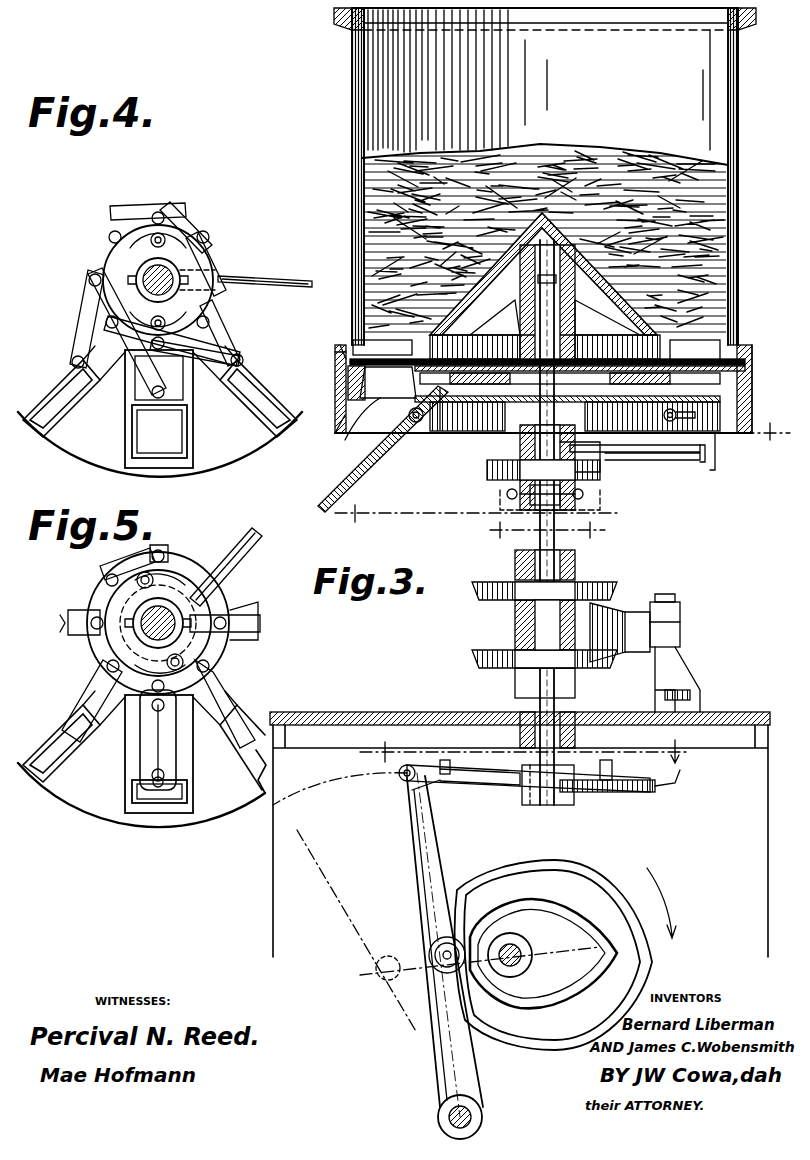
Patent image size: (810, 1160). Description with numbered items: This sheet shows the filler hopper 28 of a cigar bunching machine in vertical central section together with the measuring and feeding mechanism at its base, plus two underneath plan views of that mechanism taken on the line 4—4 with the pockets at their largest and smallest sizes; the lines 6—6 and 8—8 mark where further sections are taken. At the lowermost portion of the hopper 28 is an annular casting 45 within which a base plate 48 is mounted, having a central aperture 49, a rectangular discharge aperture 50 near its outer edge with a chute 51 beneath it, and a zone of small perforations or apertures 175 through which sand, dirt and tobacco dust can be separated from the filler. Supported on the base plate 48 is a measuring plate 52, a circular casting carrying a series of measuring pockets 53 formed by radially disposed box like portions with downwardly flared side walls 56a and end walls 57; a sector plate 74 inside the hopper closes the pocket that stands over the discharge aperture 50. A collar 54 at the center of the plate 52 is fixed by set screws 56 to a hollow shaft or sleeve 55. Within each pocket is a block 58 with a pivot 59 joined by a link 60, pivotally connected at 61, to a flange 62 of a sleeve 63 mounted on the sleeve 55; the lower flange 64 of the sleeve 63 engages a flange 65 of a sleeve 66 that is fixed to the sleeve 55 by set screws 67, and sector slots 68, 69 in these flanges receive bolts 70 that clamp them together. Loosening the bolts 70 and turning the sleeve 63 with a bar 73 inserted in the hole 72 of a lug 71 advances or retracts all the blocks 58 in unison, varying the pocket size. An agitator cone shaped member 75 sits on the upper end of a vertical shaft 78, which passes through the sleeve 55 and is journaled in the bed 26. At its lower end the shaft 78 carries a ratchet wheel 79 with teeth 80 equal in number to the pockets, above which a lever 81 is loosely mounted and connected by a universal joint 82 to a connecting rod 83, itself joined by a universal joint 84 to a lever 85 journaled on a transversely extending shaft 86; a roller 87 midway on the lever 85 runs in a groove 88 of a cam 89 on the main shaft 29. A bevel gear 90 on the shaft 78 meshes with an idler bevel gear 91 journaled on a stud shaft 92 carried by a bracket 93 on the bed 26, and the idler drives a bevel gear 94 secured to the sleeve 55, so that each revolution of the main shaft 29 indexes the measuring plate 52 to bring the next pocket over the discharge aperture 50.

In FIG. 3, the section line 4— 4 is at (545, 538).
In FIG. 3, the section line 6— 6 is at (556, 484).
In FIG. 3, the section line 8— 8 is at (519, 759).
In FIG. 3, the bed 26 is at (430, 712).
In FIG. 3, the hopper 28 is at (545, 176).
In FIG. 3, the main shaft 29 is at (522, 950).
In FIG. 3, the annular casting 45 is at (328, 352).
In FIG. 3, the base plate 48 is at (422, 422).
In FIG. 3, the central aperture 49 is at (448, 440).
In FIG. 3, the rectangular discharge aperture 50 is at (377, 430).
In FIG. 3, the chute 51 is at (383, 449).
In FIG. 3, the measuring plate 52 is at (752, 360).
In FIG. 4, the measuring plate 52 is at (263, 455).
In FIG. 5, the measuring plate 52 is at (142, 759).
In FIG. 3, the measuring pockets 53 is at (340, 433).
In FIG. 4, the measuring pockets 53 is at (185, 436).
In FIG. 3, the collar 54 is at (575, 312).
In FIG. 3, the hollow shaft or sleeve 55 is at (520, 298).
In FIG. 4, the hollow shaft or sleeve 55 is at (150, 318).
In FIG. 3, the set screws 56 is at (505, 332).
In FIG. 4, the side walls 56a is at (115, 430).
In FIG. 5, the side walls 56a is at (188, 795).
In FIG. 4, the end walls 57 is at (178, 465).
In FIG. 5, the end walls 57 is at (168, 813).
In FIG. 3, the block 58 is at (388, 382).
In FIG. 4, the block 58 is at (135, 404).
In FIG. 5, the block 58 is at (142, 760).
In FIG. 4, the pivot 59 is at (170, 405).
In FIG. 5, the pivot 59 is at (152, 782).
In FIG. 3, the link 60 is at (662, 416).
In FIG. 4, the link 60 is at (232, 254).
In FIG. 5, the link 60 is at (230, 690).
In FIG. 4, the pivotal connection 61 is at (205, 237).
In FIG. 5, the pivotal connection 61 is at (106, 663).
In FIG. 3, the flange 62 is at (570, 399).
In FIG. 4, the flange 62 is at (90, 278).
In FIG. 5, the flange 62 is at (222, 605).
In FIG. 3, the sleeve 63 is at (520, 420).
In FIG. 3, the flange 64 is at (487, 470).
In FIG. 3, the flange 65 is at (500, 492).
In FIG. 4, the flange 65 is at (120, 282).
In FIG. 5, the flange 65 is at (100, 608).
In FIG. 3, the sleeve 66 is at (582, 500).
In FIG. 4, the sleeve 66 is at (143, 294).
In FIG. 5, the sleeve 66 is at (178, 600).
In FIG. 3, the set screws 67 is at (584, 492).
In FIG. 4, the set screws 67 is at (163, 290).
In FIG. 5, the set screws 67 is at (235, 595).
In FIG. 4, the sector slot 68 is at (175, 230).
In FIG. 5, the sector slot 68 is at (168, 565).
In FIG. 5, the sector slot 69 is at (100, 600).
In FIG. 3, the bolts 70 is at (530, 495).
In FIG. 4, the bolts 70 is at (158, 212).
In FIG. 5, the bolts 70 is at (140, 570).
In FIG. 3, the lug 71 is at (698, 458).
In FIG. 3, the hole 72 is at (620, 447).
In FIG. 3, the bar 73 is at (705, 460).
In FIG. 4, the bar 73 is at (278, 280).
In FIG. 5, the bar 73 is at (262, 536).
In FIG. 3, the sector plate 74 is at (345, 345).
In FIG. 3, the cone shaped member 75 is at (607, 321).
In FIG. 3, the vertical shaft 78 is at (558, 306).
In FIG. 4, the vertical shaft 78 is at (145, 268).
In FIG. 5, the vertical shaft 78 is at (145, 630).
In FIG. 3, the ratchet wheel 79 is at (630, 790).
In FIG. 3, the teeth 80 is at (580, 790).
In FIG. 3, the lever 81 is at (669, 780).
In FIG. 3, the universal joint 82 is at (625, 742).
In FIG. 3, the connecting rod 83 is at (510, 784).
In FIG. 3, the universal joint 84 is at (440, 790).
In FIG. 3, the lever 85 is at (415, 842).
In FIG. 3, the transversely extending shaft 86 is at (482, 1117).
In FIG. 3, the roller 87 is at (432, 970).
In FIG. 3, the groove 88 is at (615, 873).
In FIG. 3, the cam 89 is at (640, 983).
In FIG. 3, the bevel gear 90 is at (472, 655).
In FIG. 3, the idler bevel gear 91 is at (612, 612).
In FIG. 3, the stud shaft 92 is at (680, 620).
In FIG. 3, the bracket 93 is at (690, 668).
In FIG. 3, the bevel gear 94 is at (480, 598).
In FIG. 3, the perforations or apertures 175 is at (728, 457).